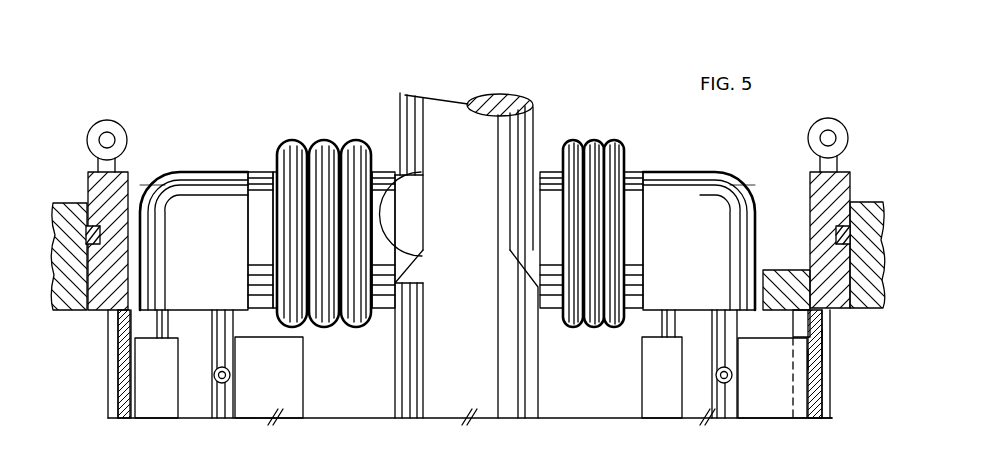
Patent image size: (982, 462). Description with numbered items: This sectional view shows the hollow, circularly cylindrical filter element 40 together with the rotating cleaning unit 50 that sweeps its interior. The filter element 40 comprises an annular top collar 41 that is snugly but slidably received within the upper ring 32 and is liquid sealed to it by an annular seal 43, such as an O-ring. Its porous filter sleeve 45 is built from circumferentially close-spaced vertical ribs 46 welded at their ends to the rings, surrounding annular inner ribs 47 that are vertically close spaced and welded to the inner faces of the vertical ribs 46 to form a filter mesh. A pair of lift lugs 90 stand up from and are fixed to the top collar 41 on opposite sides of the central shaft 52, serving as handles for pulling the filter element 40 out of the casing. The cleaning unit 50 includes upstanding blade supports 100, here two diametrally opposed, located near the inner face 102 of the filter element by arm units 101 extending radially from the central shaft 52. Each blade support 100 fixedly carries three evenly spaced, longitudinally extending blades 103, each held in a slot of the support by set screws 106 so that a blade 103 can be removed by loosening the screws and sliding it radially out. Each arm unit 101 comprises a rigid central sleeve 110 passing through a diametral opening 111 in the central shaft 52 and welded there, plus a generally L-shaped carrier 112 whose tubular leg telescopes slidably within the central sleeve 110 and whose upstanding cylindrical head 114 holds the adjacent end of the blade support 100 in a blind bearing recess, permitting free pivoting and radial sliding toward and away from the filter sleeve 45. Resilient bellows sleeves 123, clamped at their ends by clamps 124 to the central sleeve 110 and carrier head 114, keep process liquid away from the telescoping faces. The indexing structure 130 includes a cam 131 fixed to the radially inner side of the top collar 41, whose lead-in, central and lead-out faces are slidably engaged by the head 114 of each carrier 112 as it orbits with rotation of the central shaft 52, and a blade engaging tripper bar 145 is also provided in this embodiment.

The upper ring 32 is at (866, 303).
The filter element 40 is at (835, 424).
The top collar 41 is at (102, 306).
The annular seal 43 is at (76, 216).
The filter sleeve 45 is at (107, 393).
The vertical ribs 46 is at (827, 345).
The annular inner ribs 47 is at (818, 360).
The rotating cleaning unit 50 is at (156, 158).
The central shaft 52 is at (512, 97).
The lift lugs 90 is at (95, 128).
The blade support 100 is at (226, 415).
The arm units 101 is at (440, 200).
The inner face 102 is at (137, 413).
The blades 103 is at (166, 406).
The set screws 106 is at (231, 378).
The central sleeve 110 is at (410, 210).
The diametral opening 111 is at (420, 226).
The carrier 112 is at (203, 170).
The cylindrical head 114 is at (184, 173).
The bellows sleeves 123 is at (323, 141).
The clamps 124 is at (259, 171).
The indexing structure 130 is at (770, 200).
The cam 131 is at (783, 268).
The tripper bar 145 is at (796, 322).